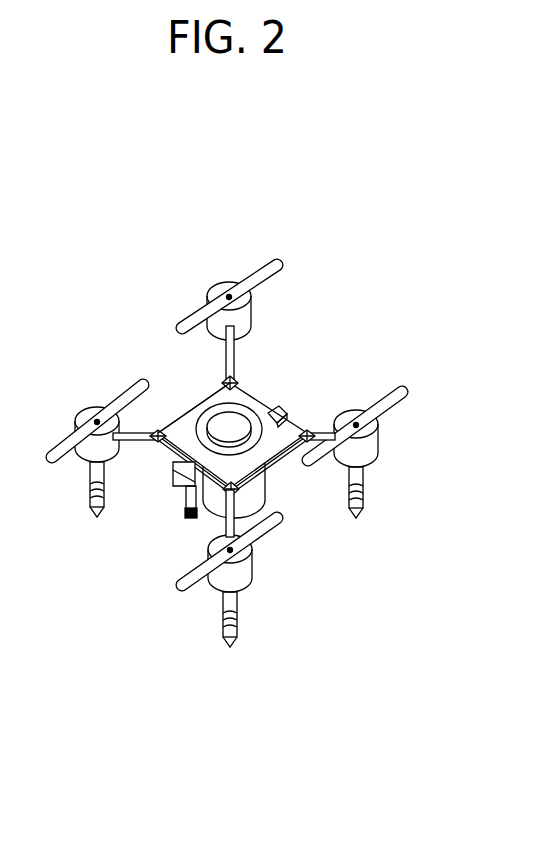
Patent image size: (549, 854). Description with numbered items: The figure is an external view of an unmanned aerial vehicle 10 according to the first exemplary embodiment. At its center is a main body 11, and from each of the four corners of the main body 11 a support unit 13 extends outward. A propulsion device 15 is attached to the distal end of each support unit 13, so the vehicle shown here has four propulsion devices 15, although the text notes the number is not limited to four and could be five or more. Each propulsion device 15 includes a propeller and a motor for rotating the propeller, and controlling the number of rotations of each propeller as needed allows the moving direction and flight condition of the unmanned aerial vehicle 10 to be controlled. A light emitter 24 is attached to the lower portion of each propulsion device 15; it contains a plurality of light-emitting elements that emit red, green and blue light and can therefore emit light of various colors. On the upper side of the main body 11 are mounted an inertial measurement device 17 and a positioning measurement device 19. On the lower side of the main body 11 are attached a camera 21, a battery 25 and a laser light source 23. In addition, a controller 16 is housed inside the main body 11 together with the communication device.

The unmanned aerial vehicle 10 is at (247, 507).
The main body 11 is at (253, 395).
The support unit 13 is at (242, 352).
The propulsion device 15 is at (254, 308).
The controller 16 is at (190, 410).
The inertial measurement device 17 is at (286, 412).
The positioning measurement device 19 is at (243, 431).
The camera 21 is at (258, 498).
The laser light source 23 is at (184, 517).
The light emitter 24 is at (368, 482).
The battery 25 is at (173, 484).